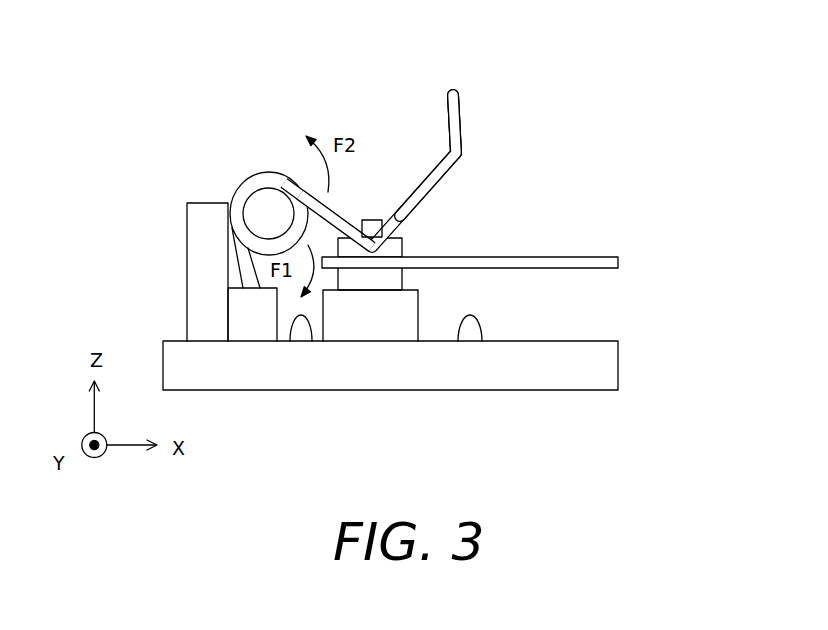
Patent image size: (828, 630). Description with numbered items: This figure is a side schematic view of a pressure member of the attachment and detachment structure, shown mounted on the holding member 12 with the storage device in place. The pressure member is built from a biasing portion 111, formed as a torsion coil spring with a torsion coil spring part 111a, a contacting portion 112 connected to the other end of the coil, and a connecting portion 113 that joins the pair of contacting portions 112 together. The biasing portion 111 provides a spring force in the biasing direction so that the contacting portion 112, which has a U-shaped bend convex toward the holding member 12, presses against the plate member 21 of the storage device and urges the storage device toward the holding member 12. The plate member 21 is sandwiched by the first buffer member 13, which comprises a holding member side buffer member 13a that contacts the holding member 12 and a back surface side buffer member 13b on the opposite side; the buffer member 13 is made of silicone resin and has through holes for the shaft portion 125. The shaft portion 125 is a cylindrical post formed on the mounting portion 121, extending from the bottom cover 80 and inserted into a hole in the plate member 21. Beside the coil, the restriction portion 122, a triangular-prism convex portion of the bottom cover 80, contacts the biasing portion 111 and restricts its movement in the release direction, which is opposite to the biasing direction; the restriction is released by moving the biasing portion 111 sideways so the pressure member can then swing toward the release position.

The holding member 12 is at (311, 335).
The first buffer member 13 is at (494, 234).
The holding member side buffer member 13a is at (404, 276).
The back surface side buffer member 13b is at (404, 240).
The plate member 21 is at (618, 260).
The bottom cover 80 is at (618, 364).
The biasing portion 111 is at (408, 151).
The torsion coil spring part 111a is at (288, 176).
The contacting portion 112 is at (378, 243).
The connecting portion 113 is at (458, 90).
The mounting portion 121 is at (482, 335).
The restriction portion 122 is at (197, 202).
The shaft portion 125 is at (373, 219).